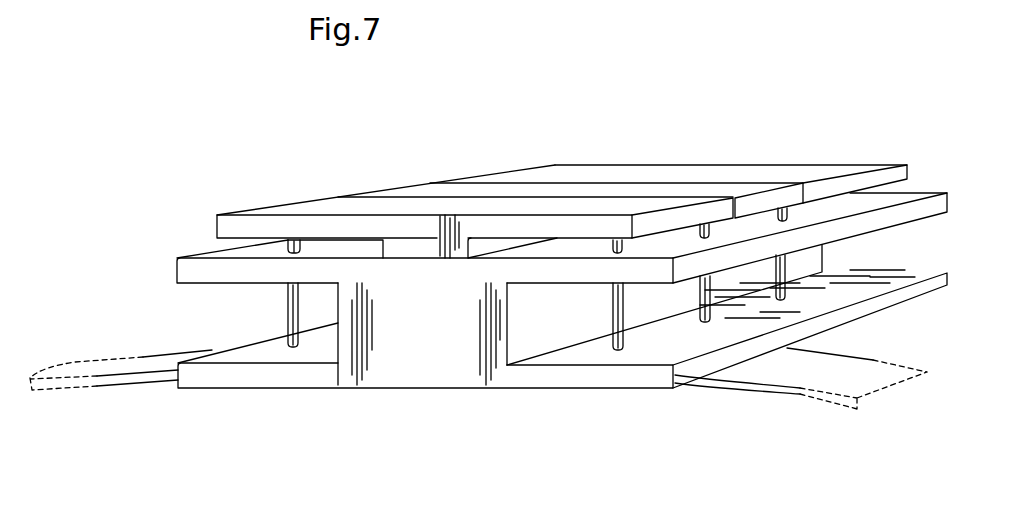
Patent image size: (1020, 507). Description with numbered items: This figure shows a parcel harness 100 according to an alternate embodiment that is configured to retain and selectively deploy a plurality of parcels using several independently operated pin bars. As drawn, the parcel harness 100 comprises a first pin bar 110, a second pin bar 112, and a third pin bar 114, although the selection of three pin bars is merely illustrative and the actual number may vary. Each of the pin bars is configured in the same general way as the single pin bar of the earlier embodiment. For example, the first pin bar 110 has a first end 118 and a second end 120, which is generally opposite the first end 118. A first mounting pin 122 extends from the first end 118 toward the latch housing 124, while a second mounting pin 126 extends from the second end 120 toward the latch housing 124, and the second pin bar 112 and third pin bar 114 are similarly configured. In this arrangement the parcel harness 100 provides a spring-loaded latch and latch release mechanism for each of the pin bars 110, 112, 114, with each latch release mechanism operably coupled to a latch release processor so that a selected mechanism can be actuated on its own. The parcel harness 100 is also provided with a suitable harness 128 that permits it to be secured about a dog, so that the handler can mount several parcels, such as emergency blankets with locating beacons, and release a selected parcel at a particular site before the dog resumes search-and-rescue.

The parcel harness 100 is at (488, 261).
The first pin bar 110 is at (406, 232).
The second pin bar 112 is at (479, 186).
The third pin bar 114 is at (773, 168).
The first end 118 is at (301, 201).
The second end 120 is at (650, 205).
The first mounting pin 122 is at (287, 317).
The latch housing 124 is at (241, 378).
The second mounting pin 126 is at (624, 338).
The harness 128 is at (776, 373).